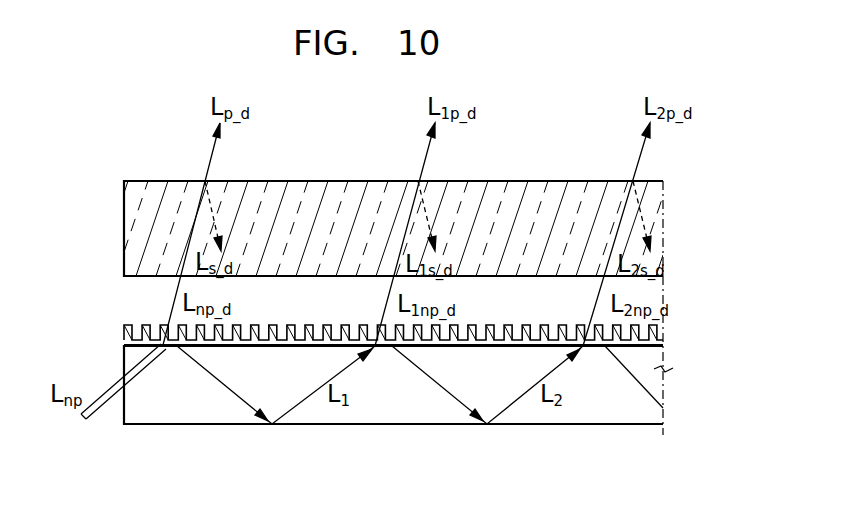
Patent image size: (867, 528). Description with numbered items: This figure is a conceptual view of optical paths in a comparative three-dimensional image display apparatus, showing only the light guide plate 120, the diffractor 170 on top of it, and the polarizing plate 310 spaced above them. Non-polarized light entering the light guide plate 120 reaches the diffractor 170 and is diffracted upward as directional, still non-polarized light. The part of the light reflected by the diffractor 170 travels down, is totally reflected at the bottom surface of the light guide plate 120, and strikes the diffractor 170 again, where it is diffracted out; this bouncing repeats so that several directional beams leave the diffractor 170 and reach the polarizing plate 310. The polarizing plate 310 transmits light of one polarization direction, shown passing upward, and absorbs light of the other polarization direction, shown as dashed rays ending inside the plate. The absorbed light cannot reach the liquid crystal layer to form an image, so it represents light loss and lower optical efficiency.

The polarizing plate 310 is at (132, 227).
The diffractor 170 is at (128, 330).
The light guide plate 120 is at (138, 419).